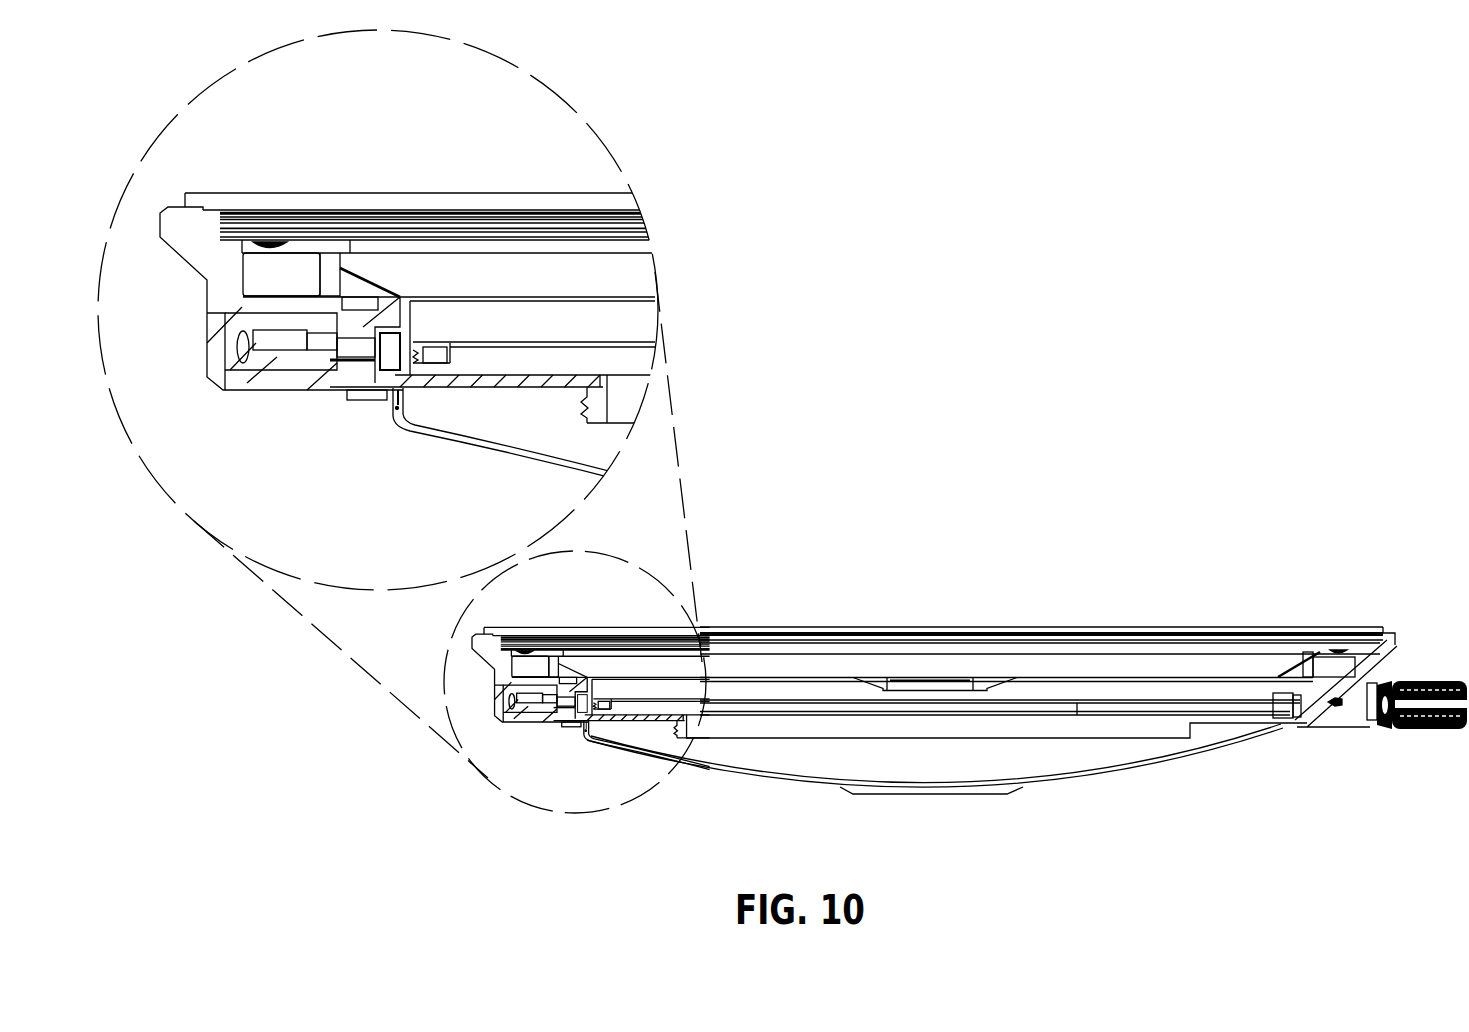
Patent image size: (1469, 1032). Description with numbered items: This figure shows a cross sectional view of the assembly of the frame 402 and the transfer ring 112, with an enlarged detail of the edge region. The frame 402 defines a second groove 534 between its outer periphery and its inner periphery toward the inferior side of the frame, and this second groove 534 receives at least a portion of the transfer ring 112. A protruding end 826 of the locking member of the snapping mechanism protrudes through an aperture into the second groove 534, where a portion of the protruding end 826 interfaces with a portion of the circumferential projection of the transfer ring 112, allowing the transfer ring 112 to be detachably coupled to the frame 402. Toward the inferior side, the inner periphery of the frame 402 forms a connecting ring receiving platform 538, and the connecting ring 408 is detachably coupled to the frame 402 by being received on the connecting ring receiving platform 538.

The frame 402 is at (259, 298).
The protruding end 826 is at (306, 403).
The second groove 534 is at (361, 400).
The transfer ring 112 is at (492, 451).
The connecting ring receiving platform 538 is at (457, 442).
The connecting ring 408 is at (531, 441).